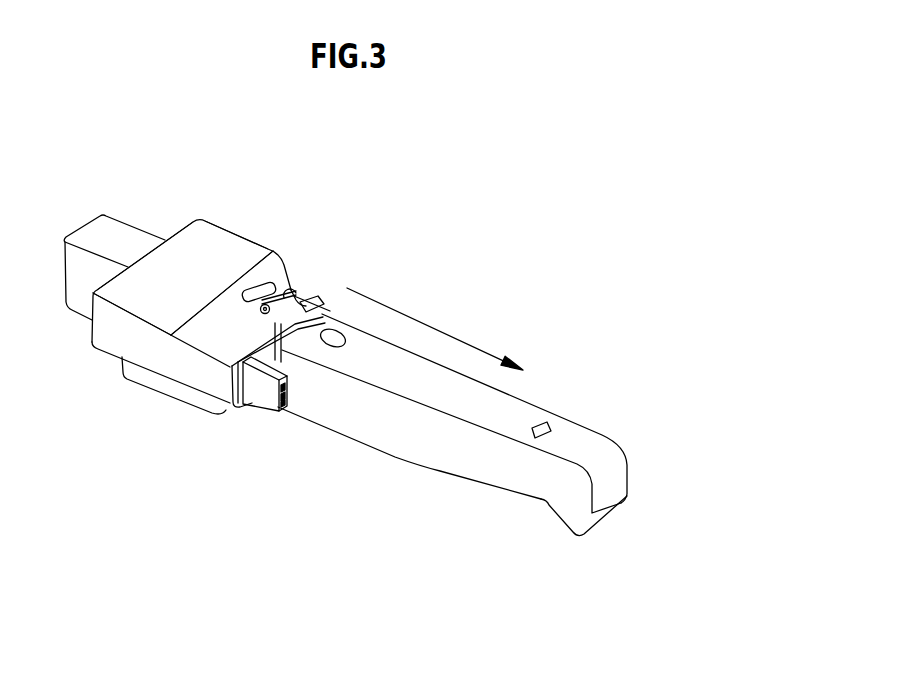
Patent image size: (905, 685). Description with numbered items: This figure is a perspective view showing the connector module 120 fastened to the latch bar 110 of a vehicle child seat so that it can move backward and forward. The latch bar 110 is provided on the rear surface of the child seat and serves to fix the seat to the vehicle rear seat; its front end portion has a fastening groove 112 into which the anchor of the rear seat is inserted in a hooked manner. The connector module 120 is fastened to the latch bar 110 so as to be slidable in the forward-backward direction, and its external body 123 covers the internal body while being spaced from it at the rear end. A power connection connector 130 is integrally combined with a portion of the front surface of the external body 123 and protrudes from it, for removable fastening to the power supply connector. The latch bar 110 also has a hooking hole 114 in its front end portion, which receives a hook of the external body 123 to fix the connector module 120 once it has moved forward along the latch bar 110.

The latch bar 110 is at (375, 449).
The fastening groove 112 is at (547, 507).
The hooking hole 114 is at (542, 428).
The connector module 120 is at (266, 252).
The external body 123 is at (210, 242).
The power connection connector 130 is at (267, 388).